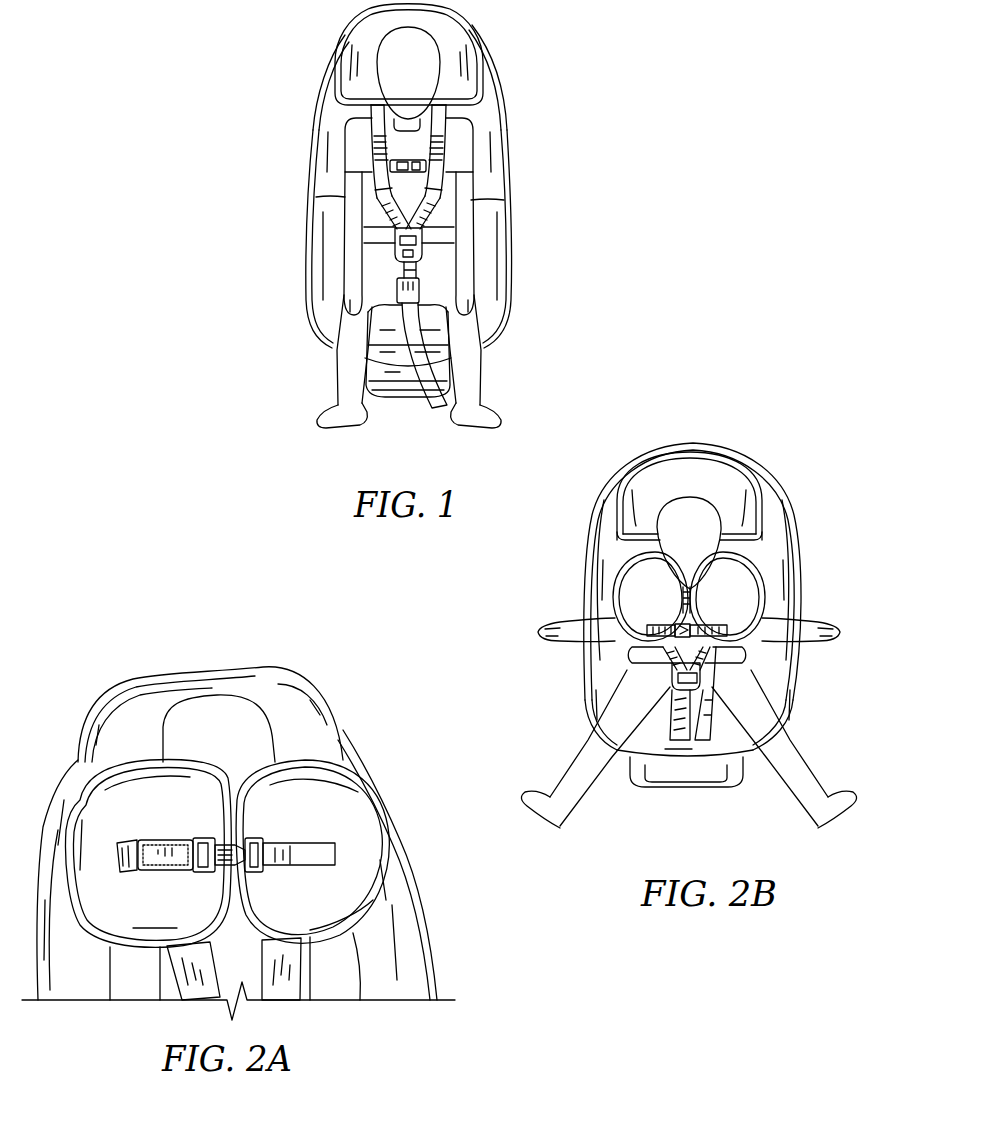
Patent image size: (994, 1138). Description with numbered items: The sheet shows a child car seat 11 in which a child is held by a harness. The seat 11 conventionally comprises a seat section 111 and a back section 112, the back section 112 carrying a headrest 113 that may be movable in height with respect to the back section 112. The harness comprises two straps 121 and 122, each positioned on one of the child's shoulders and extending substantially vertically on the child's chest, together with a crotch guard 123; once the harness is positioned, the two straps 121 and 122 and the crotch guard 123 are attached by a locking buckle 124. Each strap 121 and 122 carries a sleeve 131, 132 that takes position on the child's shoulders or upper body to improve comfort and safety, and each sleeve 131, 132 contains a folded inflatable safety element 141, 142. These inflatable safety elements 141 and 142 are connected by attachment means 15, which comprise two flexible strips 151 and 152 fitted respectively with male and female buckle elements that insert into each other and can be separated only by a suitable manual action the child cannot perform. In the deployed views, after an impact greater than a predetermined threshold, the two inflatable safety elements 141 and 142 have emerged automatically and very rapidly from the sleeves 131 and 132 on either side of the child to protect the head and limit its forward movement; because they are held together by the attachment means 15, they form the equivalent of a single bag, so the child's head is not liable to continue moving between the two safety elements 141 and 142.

In FIG. 1, the child car seat 11 is at (507, 75).
In FIG. 1, the seat section 111 is at (465, 300).
In FIG. 1, the back section 112 is at (485, 108).
In FIG. 1, the headrest 113 is at (452, 46).
In FIG. 1, the strap 121 is at (378, 208).
In FIG. 1, the strap 122 is at (488, 287).
In FIG. 1, the crotch guard 123 is at (400, 270).
In FIG. 1, the locking buckle 124 is at (387, 248).
In FIG. 1, the sleeve 131 is at (363, 145).
In FIG. 1, the sleeve 132 is at (449, 140).
In FIG. 2A, the inflatable safety element 141 is at (148, 800).
In FIG. 2B, the inflatable safety element 141 is at (638, 595).
In FIG. 2A, the inflatable safety element 142 is at (284, 805).
In FIG. 2B, the inflatable safety element 142 is at (722, 580).
In FIG. 1, the attachment means 15 is at (433, 228).
In FIG. 2A, the attachment means 15 is at (299, 853).
In FIG. 2B, the attachment means 15 is at (692, 622).
In FIG. 1, the strip 151 is at (370, 168).
In FIG. 1, the strip 152 is at (440, 167).